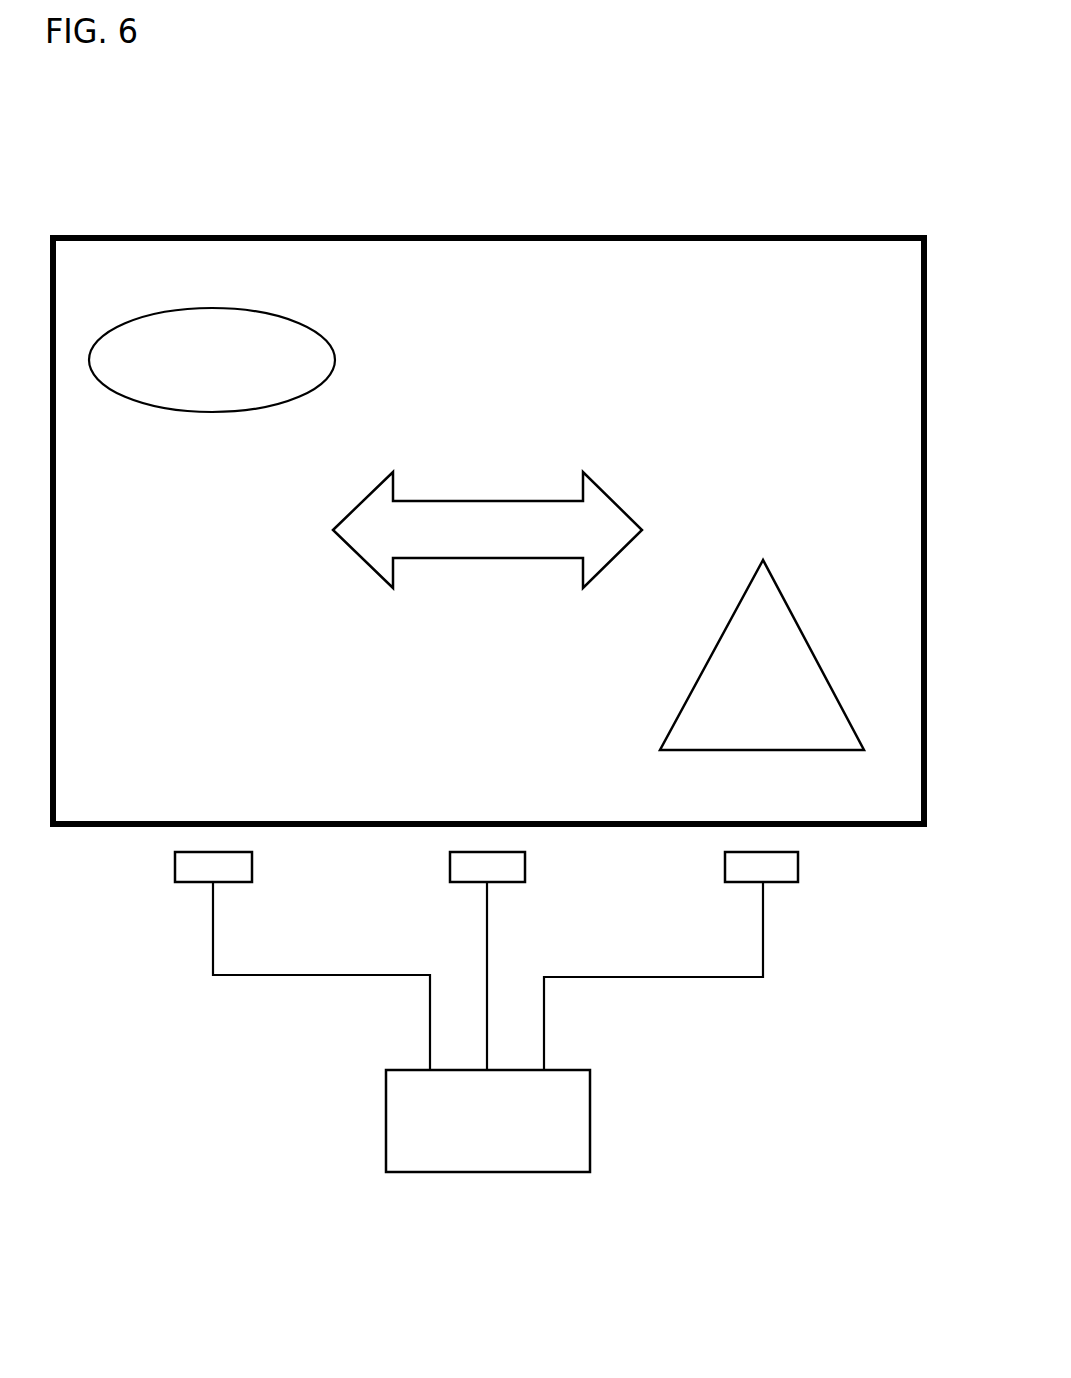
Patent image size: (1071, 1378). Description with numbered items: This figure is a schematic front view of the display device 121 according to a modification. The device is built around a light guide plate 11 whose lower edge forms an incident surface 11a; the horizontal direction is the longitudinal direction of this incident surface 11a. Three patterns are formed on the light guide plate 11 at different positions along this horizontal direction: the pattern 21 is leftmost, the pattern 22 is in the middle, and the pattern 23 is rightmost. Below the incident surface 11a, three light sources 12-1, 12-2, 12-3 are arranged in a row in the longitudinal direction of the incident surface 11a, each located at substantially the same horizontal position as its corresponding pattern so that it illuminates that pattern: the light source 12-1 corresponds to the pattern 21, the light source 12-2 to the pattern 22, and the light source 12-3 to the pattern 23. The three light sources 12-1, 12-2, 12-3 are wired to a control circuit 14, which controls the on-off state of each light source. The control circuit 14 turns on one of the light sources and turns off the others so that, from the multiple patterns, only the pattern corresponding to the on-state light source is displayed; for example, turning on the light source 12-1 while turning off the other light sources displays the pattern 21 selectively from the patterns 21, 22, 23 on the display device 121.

The light guide plate 11 is at (95, 270).
The incident surface 11a is at (88, 827).
The pattern 21 is at (212, 358).
The pattern 22 is at (482, 528).
The pattern 23 is at (763, 645).
The light source 12-1 is at (192, 885).
The light source 12-2 is at (450, 862).
The light source 12-3 is at (780, 885).
The control circuit 14 is at (386, 1120).
The display device 121 is at (764, 1166).